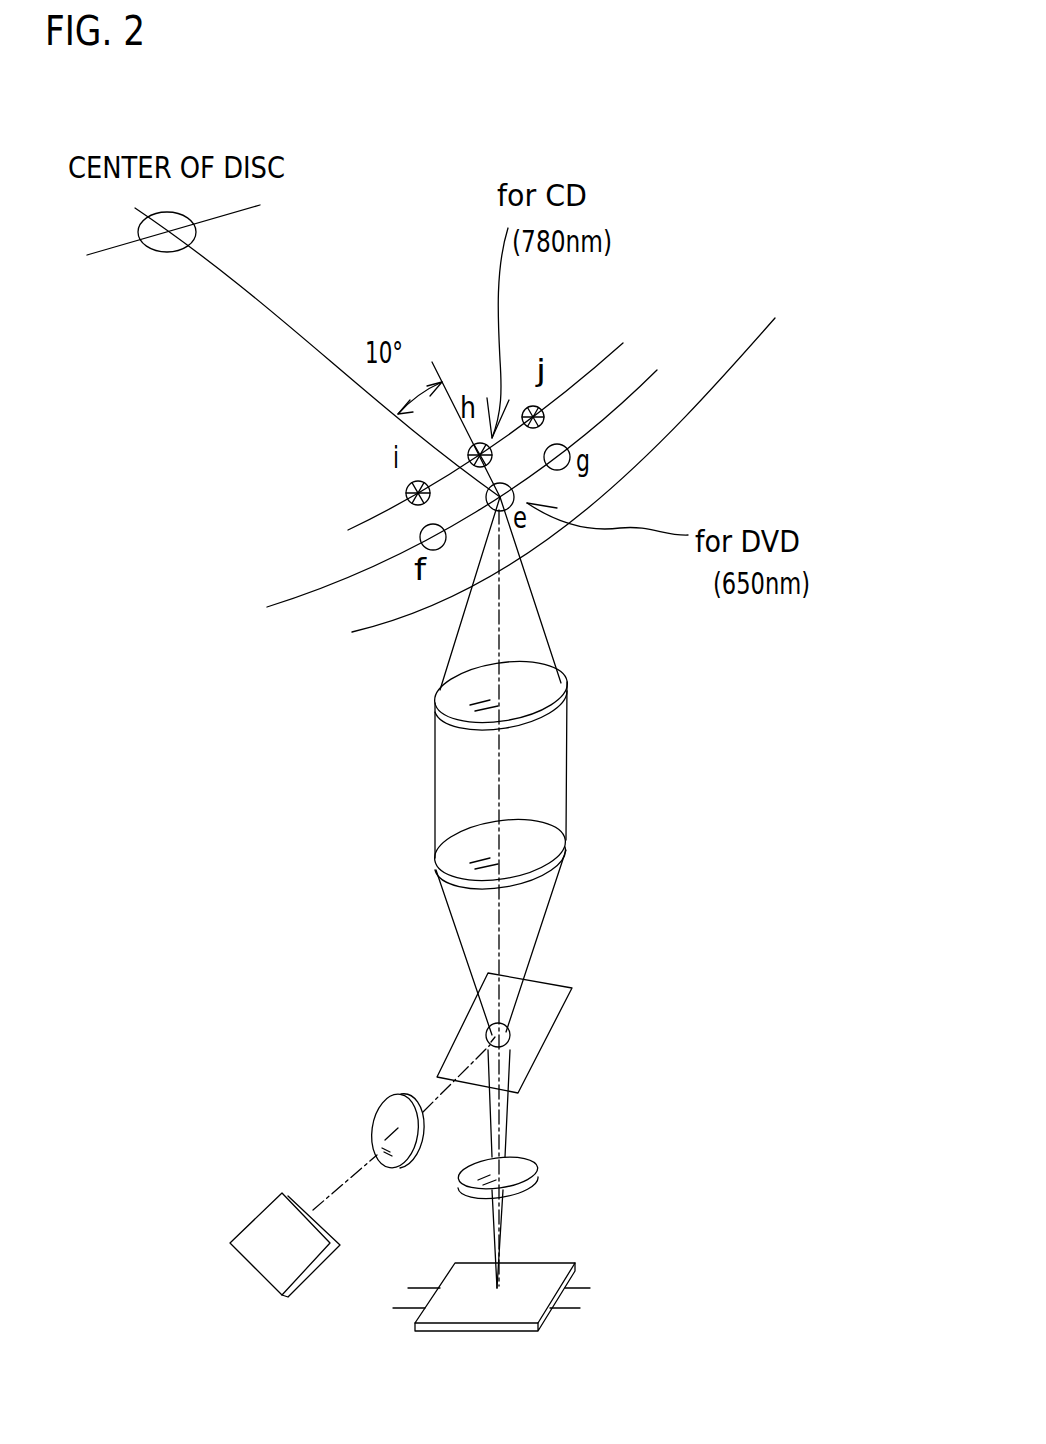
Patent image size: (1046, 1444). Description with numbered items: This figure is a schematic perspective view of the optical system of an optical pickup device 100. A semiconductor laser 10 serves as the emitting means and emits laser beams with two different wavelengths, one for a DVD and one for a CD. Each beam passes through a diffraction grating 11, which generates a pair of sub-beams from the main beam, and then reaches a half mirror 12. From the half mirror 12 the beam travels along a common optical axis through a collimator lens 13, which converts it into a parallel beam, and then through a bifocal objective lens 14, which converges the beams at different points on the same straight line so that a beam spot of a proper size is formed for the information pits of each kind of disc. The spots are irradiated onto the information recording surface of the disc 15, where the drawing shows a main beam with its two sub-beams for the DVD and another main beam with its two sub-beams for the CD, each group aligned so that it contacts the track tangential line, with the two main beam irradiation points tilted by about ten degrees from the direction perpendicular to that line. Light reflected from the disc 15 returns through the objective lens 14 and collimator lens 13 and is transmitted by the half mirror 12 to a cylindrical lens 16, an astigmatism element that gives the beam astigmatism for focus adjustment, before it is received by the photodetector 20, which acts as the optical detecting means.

The semiconductor laser 10 is at (265, 1253).
The diffraction grating 11 is at (382, 1122).
The half mirror 12 is at (545, 1012).
The collimator lens 13 is at (547, 837).
The bifocal objective lens 14 is at (542, 677).
The disc 15 is at (687, 417).
The cylindrical lens 16 is at (520, 1163).
The photodetector 20 is at (530, 1273).
The optical pickup device 100 is at (285, 737).